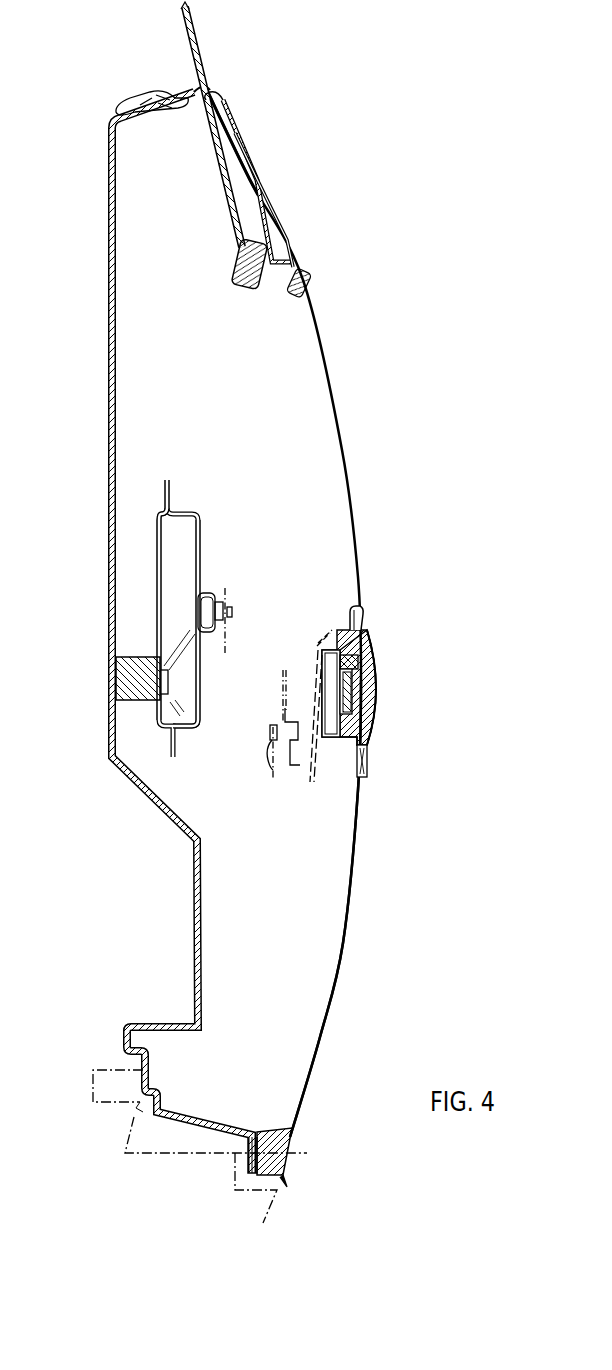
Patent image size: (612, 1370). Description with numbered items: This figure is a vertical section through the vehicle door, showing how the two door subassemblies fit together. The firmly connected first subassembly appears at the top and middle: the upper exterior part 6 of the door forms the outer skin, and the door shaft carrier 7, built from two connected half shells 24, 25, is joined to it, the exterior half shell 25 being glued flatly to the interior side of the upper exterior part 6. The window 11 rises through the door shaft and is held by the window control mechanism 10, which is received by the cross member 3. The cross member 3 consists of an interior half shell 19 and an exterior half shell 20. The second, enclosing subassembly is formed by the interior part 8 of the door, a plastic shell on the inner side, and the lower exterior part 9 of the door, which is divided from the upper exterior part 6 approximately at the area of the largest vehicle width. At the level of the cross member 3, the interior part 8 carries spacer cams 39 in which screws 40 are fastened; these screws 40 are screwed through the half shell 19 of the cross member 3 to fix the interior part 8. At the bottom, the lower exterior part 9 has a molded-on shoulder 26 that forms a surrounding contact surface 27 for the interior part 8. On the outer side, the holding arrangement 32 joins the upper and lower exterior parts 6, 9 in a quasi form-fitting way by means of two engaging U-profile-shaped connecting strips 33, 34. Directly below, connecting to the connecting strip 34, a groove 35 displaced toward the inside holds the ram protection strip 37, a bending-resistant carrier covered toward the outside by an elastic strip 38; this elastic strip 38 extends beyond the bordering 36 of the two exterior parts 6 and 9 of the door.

The cross member 3 is at (184, 491).
The upper exterior part of the door 6 is at (342, 450).
The door shaft carrier 7 is at (253, 143).
The interior part of the door 8 is at (108, 600).
The lower exterior part of the door 9 is at (343, 944).
The window control mechanism 10 is at (235, 646).
The window 11 is at (203, 63).
The interior half shell of the cross member 19 is at (157, 540).
The exterior half shell of the cross member 20 is at (200, 540).
The half shell of the door shaft carrier 24 is at (270, 240).
The exterior half shell of the door shaft carrier 25 is at (267, 200).
The molded-on shoulder 26 is at (293, 1145).
The surrounding contact surface 27 is at (253, 1130).
The holding arrangement 32 is at (335, 598).
The connecting strip 33 is at (348, 630).
The connecting strip 34 is at (371, 658).
The groove 35 is at (313, 663).
The bordering 36 is at (371, 634).
The ram protection strip 37 is at (322, 701).
The elastic strip 38 is at (376, 723).
The spacer cams 39 is at (140, 682).
The screws 40 is at (170, 686).